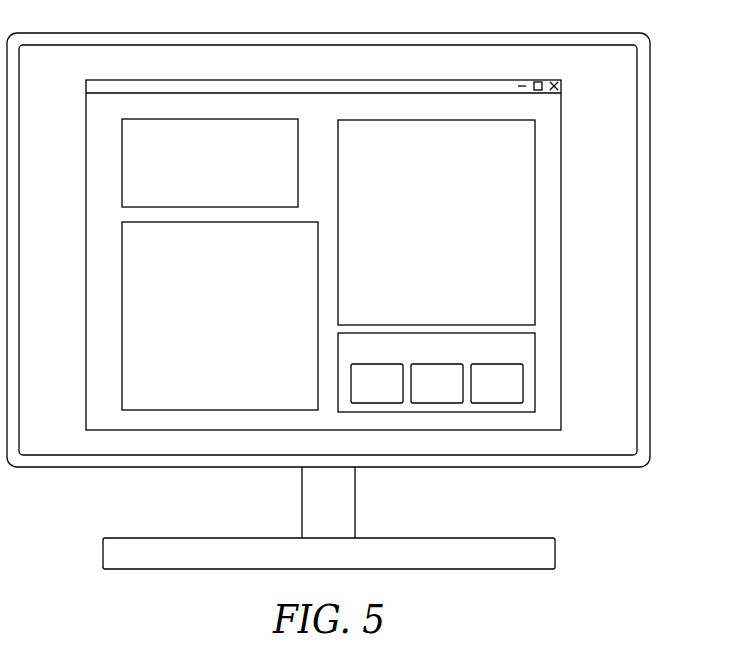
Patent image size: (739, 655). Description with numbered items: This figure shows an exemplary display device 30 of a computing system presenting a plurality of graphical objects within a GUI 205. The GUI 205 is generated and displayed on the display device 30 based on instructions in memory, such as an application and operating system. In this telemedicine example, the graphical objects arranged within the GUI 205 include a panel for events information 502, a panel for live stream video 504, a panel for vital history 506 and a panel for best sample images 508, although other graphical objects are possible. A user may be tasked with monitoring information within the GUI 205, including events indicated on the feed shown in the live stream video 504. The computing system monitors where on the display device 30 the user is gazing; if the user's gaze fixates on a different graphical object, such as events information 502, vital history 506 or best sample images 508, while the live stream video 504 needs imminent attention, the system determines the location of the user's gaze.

The display device 30 is at (651, 74).
The GUI 205 is at (562, 105).
The events information 502 is at (120, 163).
The live stream video 504 is at (536, 185).
The vital history 506 is at (120, 348).
The best sample images 508 is at (536, 372).